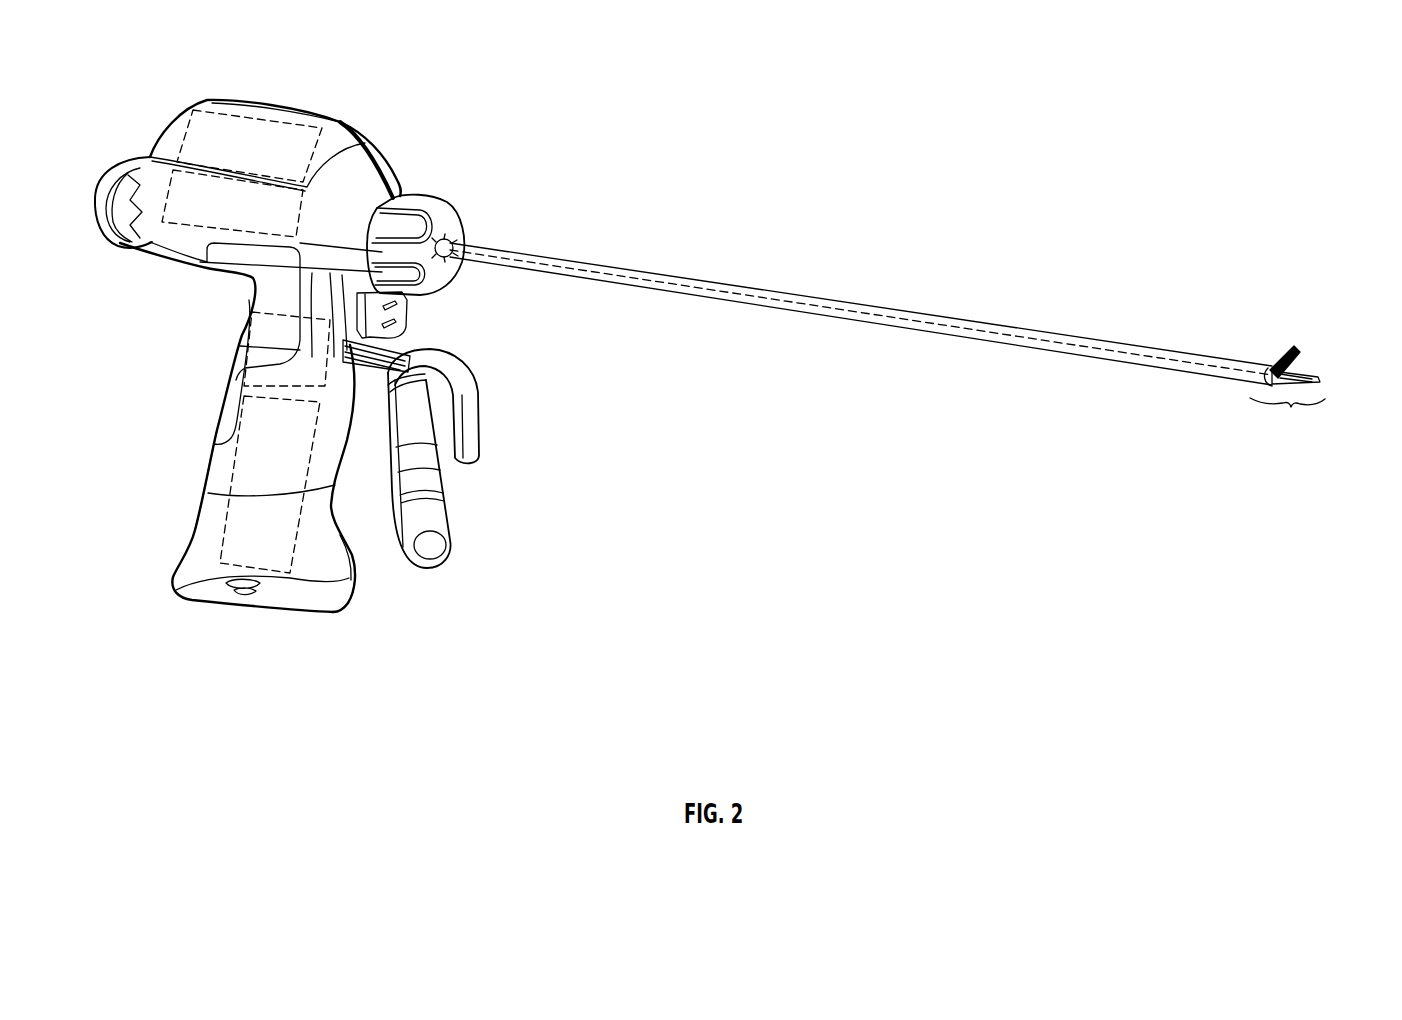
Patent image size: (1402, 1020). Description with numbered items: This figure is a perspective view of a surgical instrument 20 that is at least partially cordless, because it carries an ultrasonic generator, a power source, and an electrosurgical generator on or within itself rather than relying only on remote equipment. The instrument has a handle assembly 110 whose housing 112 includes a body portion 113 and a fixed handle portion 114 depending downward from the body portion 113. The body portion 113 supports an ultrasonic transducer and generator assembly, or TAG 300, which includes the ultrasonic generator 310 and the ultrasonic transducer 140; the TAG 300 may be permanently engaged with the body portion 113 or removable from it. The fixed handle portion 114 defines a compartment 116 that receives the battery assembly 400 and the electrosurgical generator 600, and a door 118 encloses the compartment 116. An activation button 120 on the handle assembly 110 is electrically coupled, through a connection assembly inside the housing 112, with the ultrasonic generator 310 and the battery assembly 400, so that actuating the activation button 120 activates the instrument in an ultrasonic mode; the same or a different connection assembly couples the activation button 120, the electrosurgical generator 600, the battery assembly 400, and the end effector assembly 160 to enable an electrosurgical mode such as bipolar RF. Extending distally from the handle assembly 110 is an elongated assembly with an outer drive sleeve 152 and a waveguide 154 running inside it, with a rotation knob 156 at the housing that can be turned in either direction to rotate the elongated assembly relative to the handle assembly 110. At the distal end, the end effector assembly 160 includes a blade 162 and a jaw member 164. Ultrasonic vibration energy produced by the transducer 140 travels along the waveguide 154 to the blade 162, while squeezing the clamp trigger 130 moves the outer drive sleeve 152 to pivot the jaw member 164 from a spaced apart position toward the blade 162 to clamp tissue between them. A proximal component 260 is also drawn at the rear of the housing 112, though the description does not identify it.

The surgical instrument 20 is at (858, 192).
The handle assembly 110 is at (222, 279).
The housing 112 is at (148, 245).
The body portion 113 is at (378, 160).
The fixed handle portion 114 is at (222, 465).
The compartment 116 is at (315, 598).
The door 118 is at (280, 600).
The activation button 120 is at (408, 312).
The clamp trigger 130 is at (480, 432).
The ultrasonic transducer 140 is at (177, 183).
The outer drive sleeve 152 is at (985, 344).
The waveguide 154 is at (742, 300).
The rotation knob 156 is at (445, 220).
The end effector assembly 160 is at (1287, 422).
The blade 162 is at (1310, 370).
The jaw member 164 is at (1284, 352).
The rear knob 260 is at (97, 205).
The ultrasonic transducer and generator assembly (TAG) 300 is at (273, 99).
The ultrasonic generator 310 is at (203, 132).
The battery assembly 400 is at (220, 537).
The electrosurgical generator 600 is at (258, 360).